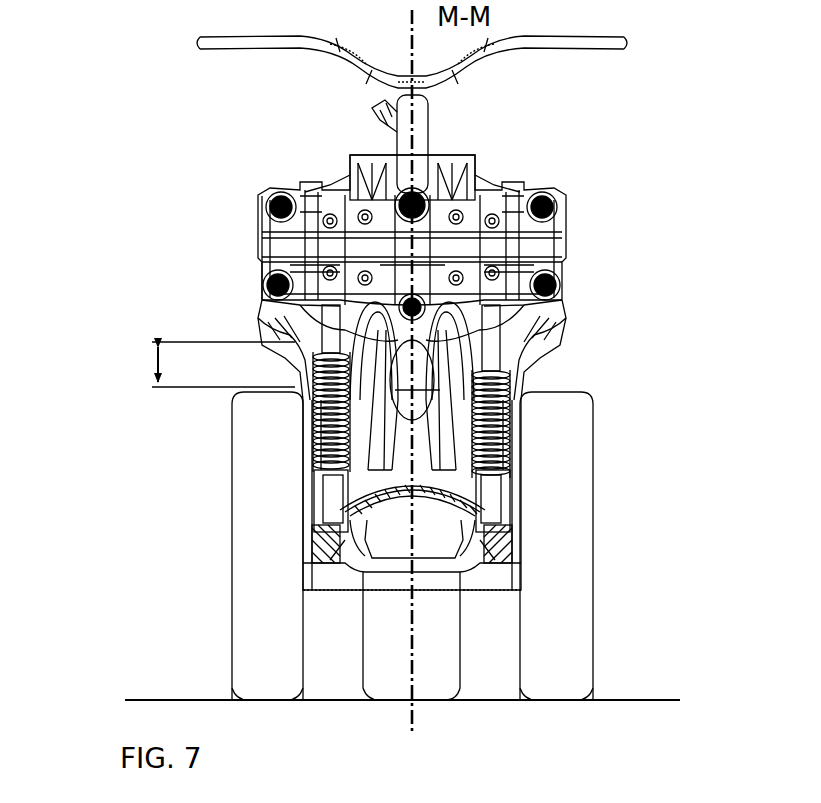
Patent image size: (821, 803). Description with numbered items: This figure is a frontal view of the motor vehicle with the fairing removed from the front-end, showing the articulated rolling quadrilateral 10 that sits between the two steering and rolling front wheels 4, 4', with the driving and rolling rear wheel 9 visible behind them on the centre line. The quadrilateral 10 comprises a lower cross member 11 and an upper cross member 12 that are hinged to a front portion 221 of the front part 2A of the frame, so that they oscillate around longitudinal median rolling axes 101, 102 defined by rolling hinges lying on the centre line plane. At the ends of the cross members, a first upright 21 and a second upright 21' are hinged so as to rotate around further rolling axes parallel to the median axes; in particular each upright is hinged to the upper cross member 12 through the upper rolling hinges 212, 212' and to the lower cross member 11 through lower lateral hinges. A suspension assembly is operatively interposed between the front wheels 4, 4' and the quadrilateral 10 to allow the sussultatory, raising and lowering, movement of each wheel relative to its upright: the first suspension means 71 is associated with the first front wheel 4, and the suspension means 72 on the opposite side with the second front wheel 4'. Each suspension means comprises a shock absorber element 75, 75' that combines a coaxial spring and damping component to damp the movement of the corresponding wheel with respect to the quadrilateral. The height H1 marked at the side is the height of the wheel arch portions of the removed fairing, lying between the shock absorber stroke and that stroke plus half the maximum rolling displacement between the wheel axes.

The articulated rolling quadrilateral 10 is at (582, 283).
The median rolling axis 102 is at (420, 198).
The upper cross member 12 is at (484, 214).
The rolling hinge 212' is at (213, 161).
The rolling hinge 212 is at (606, 169).
The second upright 21' is at (356, 247).
The first upright 21 is at (507, 254).
The lower cross member 11 is at (498, 280).
The median rolling axis 101 is at (416, 309).
The front part of the frame 2A is at (358, 320).
The front portion 221 is at (410, 393).
The shock absorber element 75' is at (252, 405).
The shock absorber element 75 is at (592, 403).
The suspension means 72 is at (309, 512).
The first suspension means 71 is at (514, 476).
The height H1 is at (206, 364).
The front wheel 4' is at (205, 546).
The front wheel 4 is at (638, 546).
The rear wheel 9 is at (452, 652).